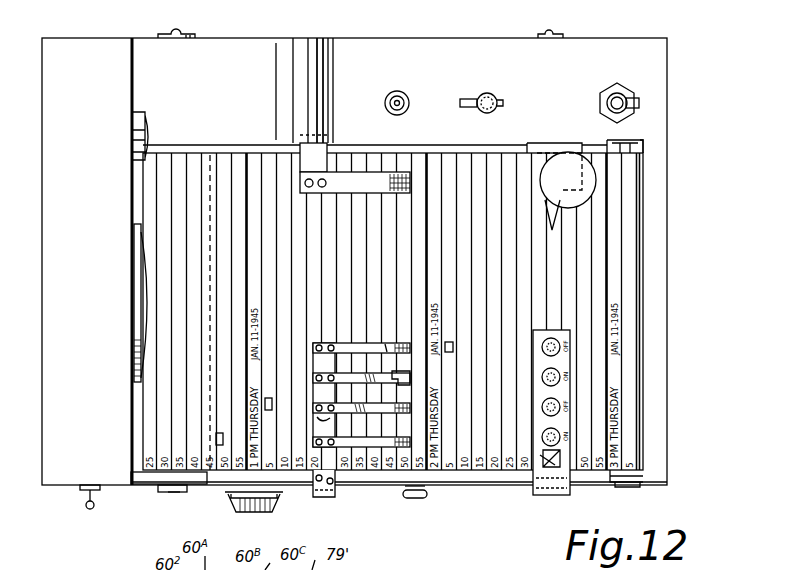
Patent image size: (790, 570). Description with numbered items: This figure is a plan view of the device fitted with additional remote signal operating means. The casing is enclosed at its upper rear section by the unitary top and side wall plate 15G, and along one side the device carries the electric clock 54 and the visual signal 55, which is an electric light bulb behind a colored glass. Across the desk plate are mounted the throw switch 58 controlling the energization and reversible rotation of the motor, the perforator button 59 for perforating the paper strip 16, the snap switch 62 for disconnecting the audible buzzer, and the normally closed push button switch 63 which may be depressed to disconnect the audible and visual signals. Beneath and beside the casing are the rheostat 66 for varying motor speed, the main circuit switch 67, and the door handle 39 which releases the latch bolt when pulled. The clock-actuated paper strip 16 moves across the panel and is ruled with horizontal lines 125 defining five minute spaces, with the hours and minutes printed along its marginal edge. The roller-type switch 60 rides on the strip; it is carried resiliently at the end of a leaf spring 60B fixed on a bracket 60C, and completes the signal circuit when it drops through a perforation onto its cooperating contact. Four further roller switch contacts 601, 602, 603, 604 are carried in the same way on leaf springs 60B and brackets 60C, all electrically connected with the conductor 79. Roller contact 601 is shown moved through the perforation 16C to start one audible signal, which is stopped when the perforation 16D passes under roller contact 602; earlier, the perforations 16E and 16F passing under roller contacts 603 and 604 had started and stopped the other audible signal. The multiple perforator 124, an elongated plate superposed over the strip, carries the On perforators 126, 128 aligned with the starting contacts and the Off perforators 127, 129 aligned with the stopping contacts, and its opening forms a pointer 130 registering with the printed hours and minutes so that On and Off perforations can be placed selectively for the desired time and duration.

The visual signal 55 is at (148, 126).
The unitary top and side wall plate 15G is at (292, 88).
The snap switch 62 is at (386, 92).
The throw switch 58 is at (490, 93).
The push button switch 63 is at (640, 103).
The perforator button 59 is at (588, 184).
The paper strip 16 is at (610, 253).
The horizontal lines 125 is at (592, 275).
The bracket 60C is at (318, 150).
The roller-type switch 60 is at (386, 194).
The leaf spring 60B is at (356, 177).
The circuit-closing roller switch contact 601 is at (403, 377).
The circuit-closing roller switch contact 602 is at (383, 343).
The circuit-closing roller switch contact 603 is at (395, 441).
The circuit-closing roller switch contact 604 is at (395, 406).
The perforation 16C is at (394, 372).
The perforation 16D is at (449, 341).
The perforation 16E is at (216, 439).
The perforation 16F is at (267, 397).
The conductor 79 is at (324, 350).
The multiple perforator 124 is at (552, 496).
The Off perforator 127 is at (541, 347).
The On perforator 126 is at (541, 377).
The Off perforator 129 is at (541, 407).
The On perforator 128 is at (541, 437).
The pointer 130 is at (545, 455).
The electric clock 54 is at (147, 293).
The main circuit switch 67 is at (86, 507).
The rheostat 66 is at (225, 501).
The door handle 39 is at (427, 494).